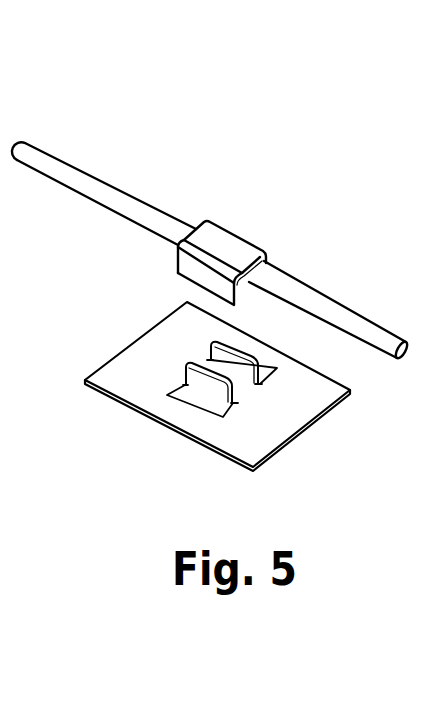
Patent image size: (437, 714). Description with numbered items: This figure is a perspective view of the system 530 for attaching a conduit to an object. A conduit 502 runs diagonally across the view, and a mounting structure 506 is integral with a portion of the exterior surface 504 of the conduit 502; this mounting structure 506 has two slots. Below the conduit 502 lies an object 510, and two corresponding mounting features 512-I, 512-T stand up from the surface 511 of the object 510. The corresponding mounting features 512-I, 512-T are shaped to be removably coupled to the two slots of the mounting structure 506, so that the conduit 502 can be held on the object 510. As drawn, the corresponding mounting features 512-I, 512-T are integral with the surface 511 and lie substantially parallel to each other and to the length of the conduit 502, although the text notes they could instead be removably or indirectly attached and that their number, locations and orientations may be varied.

The conduit 502 is at (58, 142).
The exterior surface of the conduit 504 is at (118, 191).
The mounting structure 506 is at (241, 226).
The object 510 is at (138, 331).
The surface of the object 511 is at (128, 373).
The corresponding mounting feature 512-I is at (243, 362).
The corresponding mounting feature 512-T is at (220, 385).
The system 530 is at (324, 91).